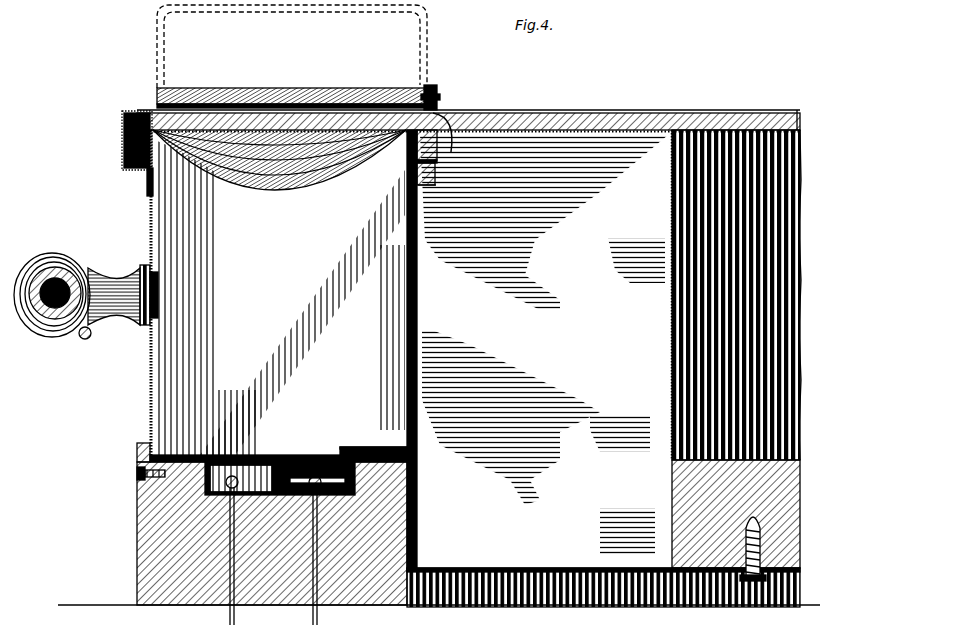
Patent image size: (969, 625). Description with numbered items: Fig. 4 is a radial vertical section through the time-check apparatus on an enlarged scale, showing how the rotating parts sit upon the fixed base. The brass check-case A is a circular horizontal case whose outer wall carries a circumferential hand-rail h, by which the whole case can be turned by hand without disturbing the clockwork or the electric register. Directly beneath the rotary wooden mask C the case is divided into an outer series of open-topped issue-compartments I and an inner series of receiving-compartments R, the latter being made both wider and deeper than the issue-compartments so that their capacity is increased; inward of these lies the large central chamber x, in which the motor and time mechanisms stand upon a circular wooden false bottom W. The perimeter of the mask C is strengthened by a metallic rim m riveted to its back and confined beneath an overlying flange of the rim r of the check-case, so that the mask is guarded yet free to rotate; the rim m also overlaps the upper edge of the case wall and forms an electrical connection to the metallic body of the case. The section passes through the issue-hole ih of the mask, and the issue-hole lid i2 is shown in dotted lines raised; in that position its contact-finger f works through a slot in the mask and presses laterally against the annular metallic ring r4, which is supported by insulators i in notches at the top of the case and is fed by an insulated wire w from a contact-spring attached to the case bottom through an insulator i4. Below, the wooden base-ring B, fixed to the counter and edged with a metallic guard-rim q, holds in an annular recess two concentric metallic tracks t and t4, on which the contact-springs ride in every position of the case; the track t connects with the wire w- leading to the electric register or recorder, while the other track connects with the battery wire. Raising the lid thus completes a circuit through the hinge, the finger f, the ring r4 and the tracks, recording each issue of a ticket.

The rotary mask C is at (708, 110).
The metallic rim of mask m is at (130, 114).
The rim of check-case r is at (124, 150).
The issue-hole ih is at (302, 110).
The issue-hole lid i2 is at (142, 104).
The contact-finger f is at (438, 111).
The metallic ring r4 is at (440, 157).
The insulators i is at (436, 174).
The insulated wire w is at (407, 240).
The check-case A is at (150, 218).
The issue-compartments I is at (279, 292).
The receiving-compartments R is at (544, 345).
The central chamber x is at (790, 238).
The false bottom W is at (736, 520).
The base-ring B is at (125, 541).
The guard-rim q is at (137, 453).
The metallic track t is at (236, 495).
The metallic track t4 is at (322, 490).
The insulator i4 is at (286, 456).
The wire to register w- is at (243, 550).
The hand-rail h is at (118, 272).